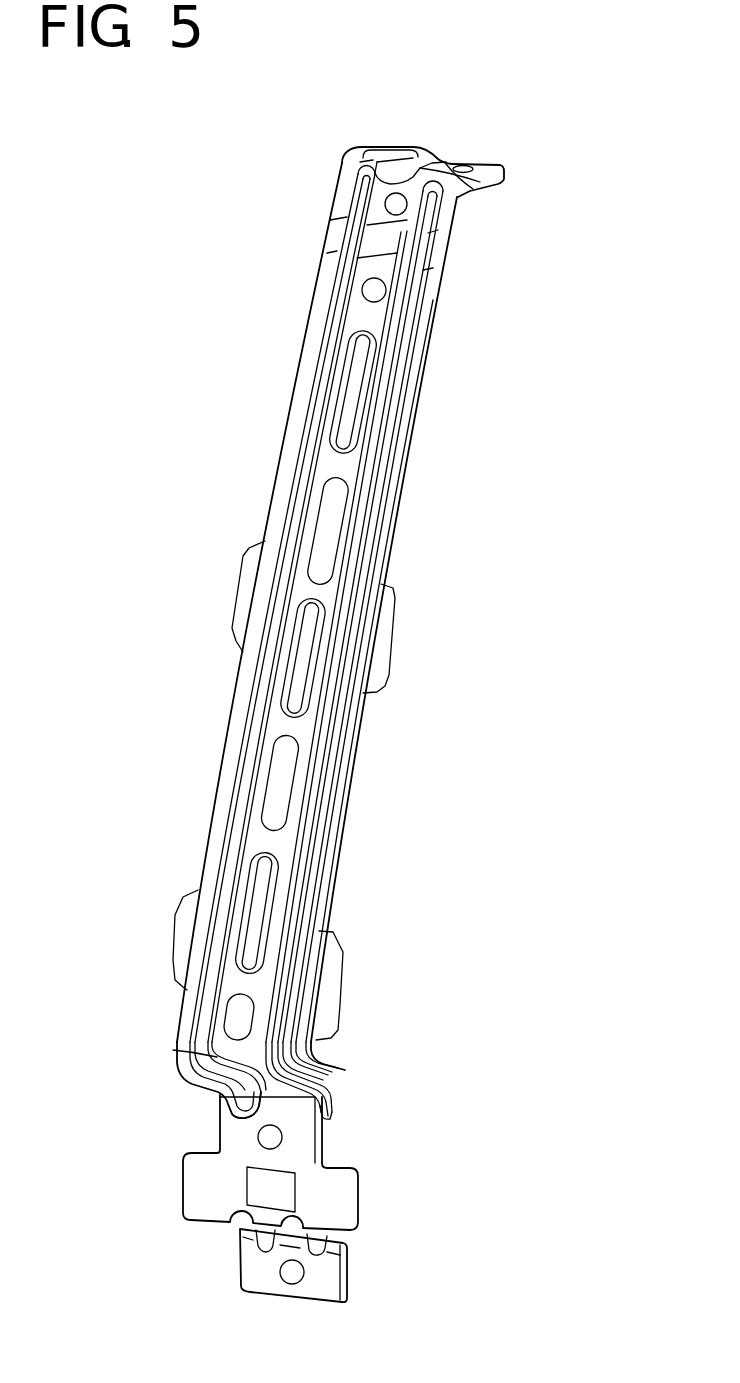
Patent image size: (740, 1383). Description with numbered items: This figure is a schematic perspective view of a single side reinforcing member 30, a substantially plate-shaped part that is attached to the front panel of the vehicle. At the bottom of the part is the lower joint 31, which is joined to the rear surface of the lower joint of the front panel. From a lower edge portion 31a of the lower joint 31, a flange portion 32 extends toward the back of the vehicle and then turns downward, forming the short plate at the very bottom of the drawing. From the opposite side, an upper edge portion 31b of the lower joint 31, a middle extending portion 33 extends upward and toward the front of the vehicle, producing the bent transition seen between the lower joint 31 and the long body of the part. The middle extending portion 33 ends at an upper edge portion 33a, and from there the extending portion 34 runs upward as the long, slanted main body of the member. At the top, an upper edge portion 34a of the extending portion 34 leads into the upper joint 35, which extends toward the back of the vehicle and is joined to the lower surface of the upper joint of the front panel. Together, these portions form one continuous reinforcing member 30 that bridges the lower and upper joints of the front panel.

The side reinforcing member 30 is at (405, 110).
The lower joint 31 is at (210, 1180).
The lower edge portion 31a is at (222, 1225).
The upper edge portion 31b is at (220, 1096).
The flange portion 32 is at (262, 1278).
The middle extending portion 33 is at (240, 1068).
The upper edge portion 33a is at (247, 1047).
The extending portion 34 is at (343, 466).
The upper edge portion 34a is at (450, 163).
The upper joint 35 is at (490, 167).